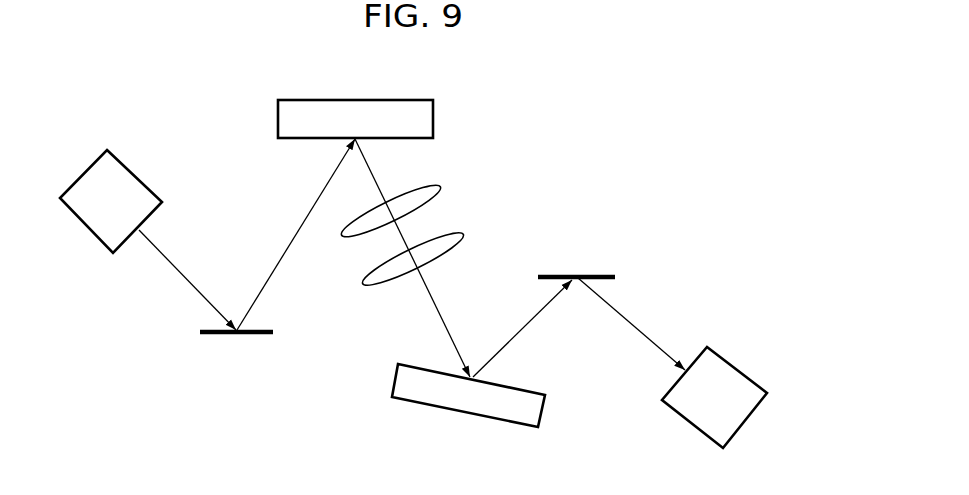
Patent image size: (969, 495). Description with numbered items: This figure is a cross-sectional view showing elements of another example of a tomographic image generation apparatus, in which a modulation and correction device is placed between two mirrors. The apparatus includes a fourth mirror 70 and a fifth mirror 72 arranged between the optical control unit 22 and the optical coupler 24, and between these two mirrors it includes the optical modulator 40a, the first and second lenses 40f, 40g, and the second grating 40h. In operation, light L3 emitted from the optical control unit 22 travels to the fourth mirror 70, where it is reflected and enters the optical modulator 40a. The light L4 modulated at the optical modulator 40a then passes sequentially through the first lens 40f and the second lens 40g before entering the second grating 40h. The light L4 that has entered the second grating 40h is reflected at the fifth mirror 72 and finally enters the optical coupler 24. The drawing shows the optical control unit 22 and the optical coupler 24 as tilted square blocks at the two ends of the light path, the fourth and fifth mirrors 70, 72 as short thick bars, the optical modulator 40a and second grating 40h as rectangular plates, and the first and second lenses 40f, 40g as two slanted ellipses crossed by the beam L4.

The optical control unit 22 is at (135, 175).
The light L3 is at (183, 280).
The fourth mirror 70 is at (213, 337).
The optical modulator 40a is at (320, 100).
The light L4 is at (377, 172).
The first lens 40f is at (435, 195).
The second lens 40g is at (452, 247).
The second grating 40h is at (430, 407).
The fifth mirror 72 is at (600, 273).
The optical coupler 24 is at (725, 355).